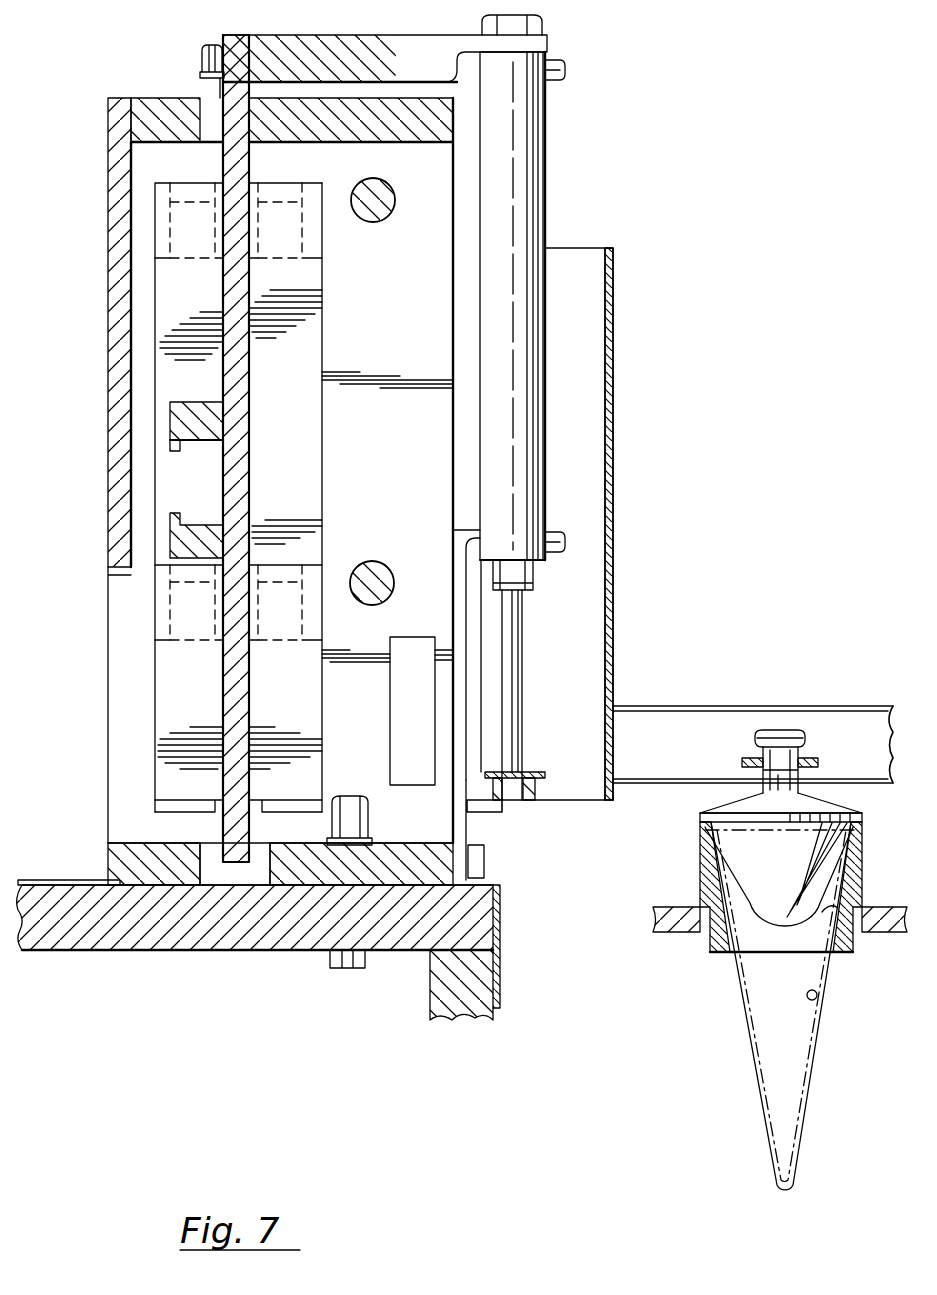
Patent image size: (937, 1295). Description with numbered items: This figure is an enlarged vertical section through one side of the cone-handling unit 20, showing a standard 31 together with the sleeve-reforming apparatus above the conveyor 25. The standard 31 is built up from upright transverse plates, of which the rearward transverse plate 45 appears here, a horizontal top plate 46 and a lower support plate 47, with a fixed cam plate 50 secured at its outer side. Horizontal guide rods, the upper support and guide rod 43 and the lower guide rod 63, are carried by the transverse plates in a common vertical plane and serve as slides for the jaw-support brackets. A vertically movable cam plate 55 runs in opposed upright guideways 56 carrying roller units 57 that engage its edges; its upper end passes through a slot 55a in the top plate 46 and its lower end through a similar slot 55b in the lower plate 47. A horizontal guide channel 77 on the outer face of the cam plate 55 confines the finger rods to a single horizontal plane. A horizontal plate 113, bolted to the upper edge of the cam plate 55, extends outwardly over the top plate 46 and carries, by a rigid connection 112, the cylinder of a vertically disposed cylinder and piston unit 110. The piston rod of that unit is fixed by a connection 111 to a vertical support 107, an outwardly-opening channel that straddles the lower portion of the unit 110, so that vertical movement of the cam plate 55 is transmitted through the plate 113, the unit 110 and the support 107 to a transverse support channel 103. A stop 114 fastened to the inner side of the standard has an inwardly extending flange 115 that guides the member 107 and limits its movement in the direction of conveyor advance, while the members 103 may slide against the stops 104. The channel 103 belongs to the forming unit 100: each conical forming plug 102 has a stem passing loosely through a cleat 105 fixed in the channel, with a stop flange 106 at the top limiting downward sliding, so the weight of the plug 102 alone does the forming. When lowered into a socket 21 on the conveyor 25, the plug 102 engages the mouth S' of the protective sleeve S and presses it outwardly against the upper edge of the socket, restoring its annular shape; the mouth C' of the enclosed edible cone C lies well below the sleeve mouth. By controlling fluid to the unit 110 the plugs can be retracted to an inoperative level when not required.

The unit 20 is at (650, 618).
The standard 31 is at (104, 180).
The cam plate 50 is at (108, 520).
The slot 55a is at (208, 104).
The horizontal plate 113 is at (370, 45).
The connection 112 is at (535, 26).
The top plate 46 is at (325, 128).
The rearward transverse plate 45 is at (280, 470).
The cam plate 55 is at (246, 425).
The guideway 56 is at (323, 348).
The roller unit 57 is at (270, 206).
The support and guide rod 43 is at (375, 222).
The guide rod 63 is at (392, 598).
The guide channel 77 is at (210, 402).
The lower support plate 47 is at (118, 857).
The slot 55b is at (261, 875).
The stop 114 is at (466, 530).
The cylinder and piston unit 110 is at (540, 204).
The connection 111 is at (520, 770).
The flange 115 is at (482, 808).
The vertical support 107 is at (612, 506).
The support channel 103 is at (886, 722).
The stop flange 106 is at (772, 730).
The cleat 105 is at (806, 760).
The stop 104 is at (770, 768).
The forming unit 100 is at (858, 806).
The socket 21 is at (858, 856).
The conveyor 25 is at (878, 900).
The forming plug 102 is at (742, 860).
The mouth of the sleeve S' is at (750, 834).
The mouth of the cone C' is at (822, 926).
The sleeve S is at (786, 1006).
The cone C is at (790, 1005).